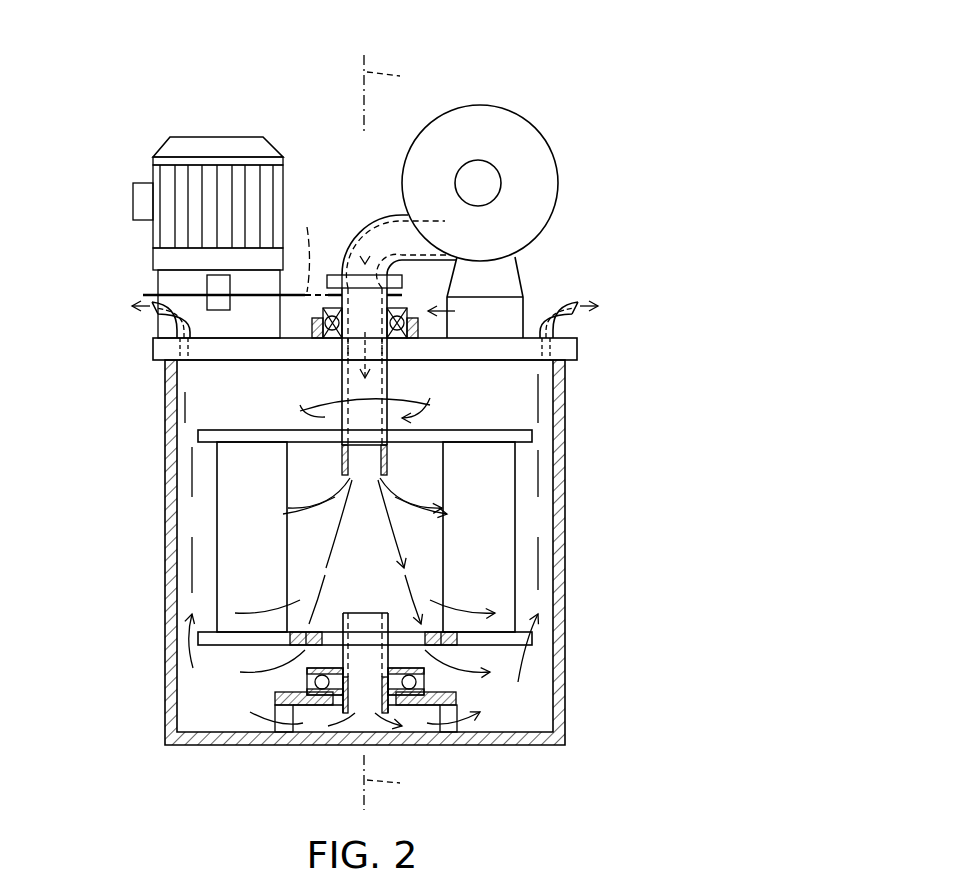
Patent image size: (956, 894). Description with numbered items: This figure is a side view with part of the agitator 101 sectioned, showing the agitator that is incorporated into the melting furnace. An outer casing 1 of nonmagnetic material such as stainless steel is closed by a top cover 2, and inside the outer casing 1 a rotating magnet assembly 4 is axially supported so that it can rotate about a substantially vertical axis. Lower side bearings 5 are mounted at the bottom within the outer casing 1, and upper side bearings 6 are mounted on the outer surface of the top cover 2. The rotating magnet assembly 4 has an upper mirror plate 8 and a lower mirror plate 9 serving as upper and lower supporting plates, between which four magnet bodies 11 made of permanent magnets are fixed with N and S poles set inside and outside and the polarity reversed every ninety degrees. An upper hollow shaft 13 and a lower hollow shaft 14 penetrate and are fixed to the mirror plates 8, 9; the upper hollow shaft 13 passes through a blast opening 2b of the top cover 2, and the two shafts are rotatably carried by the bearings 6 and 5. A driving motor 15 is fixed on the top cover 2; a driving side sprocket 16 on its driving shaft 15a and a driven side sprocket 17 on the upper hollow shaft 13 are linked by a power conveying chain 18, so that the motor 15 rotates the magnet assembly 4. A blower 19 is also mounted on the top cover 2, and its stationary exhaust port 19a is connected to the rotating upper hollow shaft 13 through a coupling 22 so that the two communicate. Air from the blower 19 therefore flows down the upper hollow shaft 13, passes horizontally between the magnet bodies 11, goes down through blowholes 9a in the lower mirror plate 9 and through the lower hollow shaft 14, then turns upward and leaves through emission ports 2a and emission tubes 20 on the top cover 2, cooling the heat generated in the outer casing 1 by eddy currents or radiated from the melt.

The agitator 101 is at (458, 95).
The outer casing 1 is at (558, 553).
The top cover 2 is at (570, 348).
The emission port 2a is at (190, 366).
The blast opening 2b is at (340, 372).
The rotating magnet assembly 4 is at (204, 520).
The lower side bearing 5 is at (288, 682).
The upper side bearing 6 is at (450, 305).
The upper mirror plate 8 is at (523, 435).
The lower mirror plate 9 is at (523, 638).
The blowhole 9a is at (300, 630).
The magnet body 11 is at (500, 497).
The upper hollow shaft 13 is at (378, 378).
The lower hollow shaft 14 is at (390, 665).
The driving motor 15 is at (225, 140).
The driving shaft 15a is at (213, 285).
The driving side sprocket 16 is at (178, 292).
The driven side sprocket 17 is at (400, 292).
The power conveying chain 18 is at (309, 246).
The blower 19 is at (540, 165).
The exhaust port 19a is at (353, 265).
The emission tube 20 is at (157, 316).
The coupling 22 is at (376, 285).